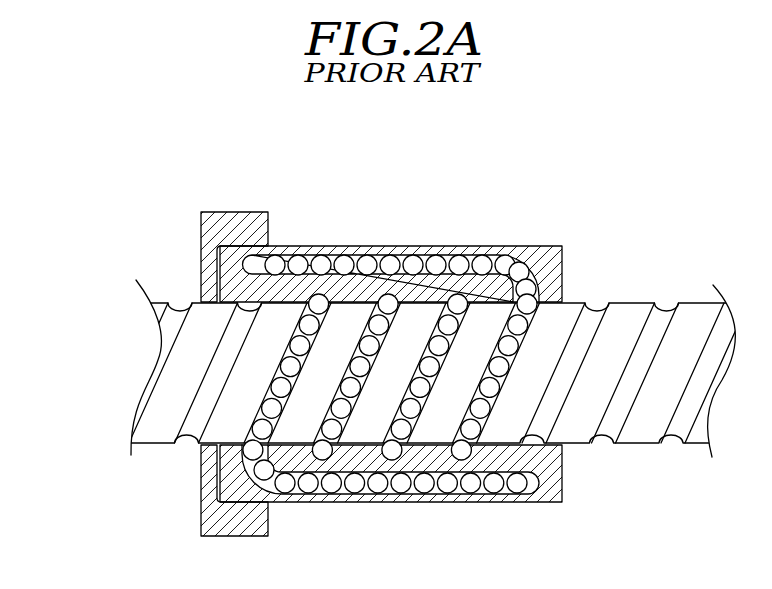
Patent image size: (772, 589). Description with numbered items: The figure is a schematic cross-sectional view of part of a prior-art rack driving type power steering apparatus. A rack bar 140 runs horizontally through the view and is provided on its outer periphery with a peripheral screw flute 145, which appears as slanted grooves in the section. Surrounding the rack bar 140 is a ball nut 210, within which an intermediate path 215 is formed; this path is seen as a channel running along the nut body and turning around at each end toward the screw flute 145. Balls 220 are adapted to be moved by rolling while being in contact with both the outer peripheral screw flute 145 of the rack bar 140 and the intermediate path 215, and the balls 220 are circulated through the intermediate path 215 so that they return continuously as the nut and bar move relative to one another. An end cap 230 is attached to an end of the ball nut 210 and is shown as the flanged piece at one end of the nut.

The rack bar 140 is at (148, 410).
The peripheral screw flute 145 is at (185, 435).
The ball nut 210 is at (548, 492).
The intermediate path 215 is at (253, 268).
The balls 220 is at (460, 262).
The end cap 230 is at (237, 220).